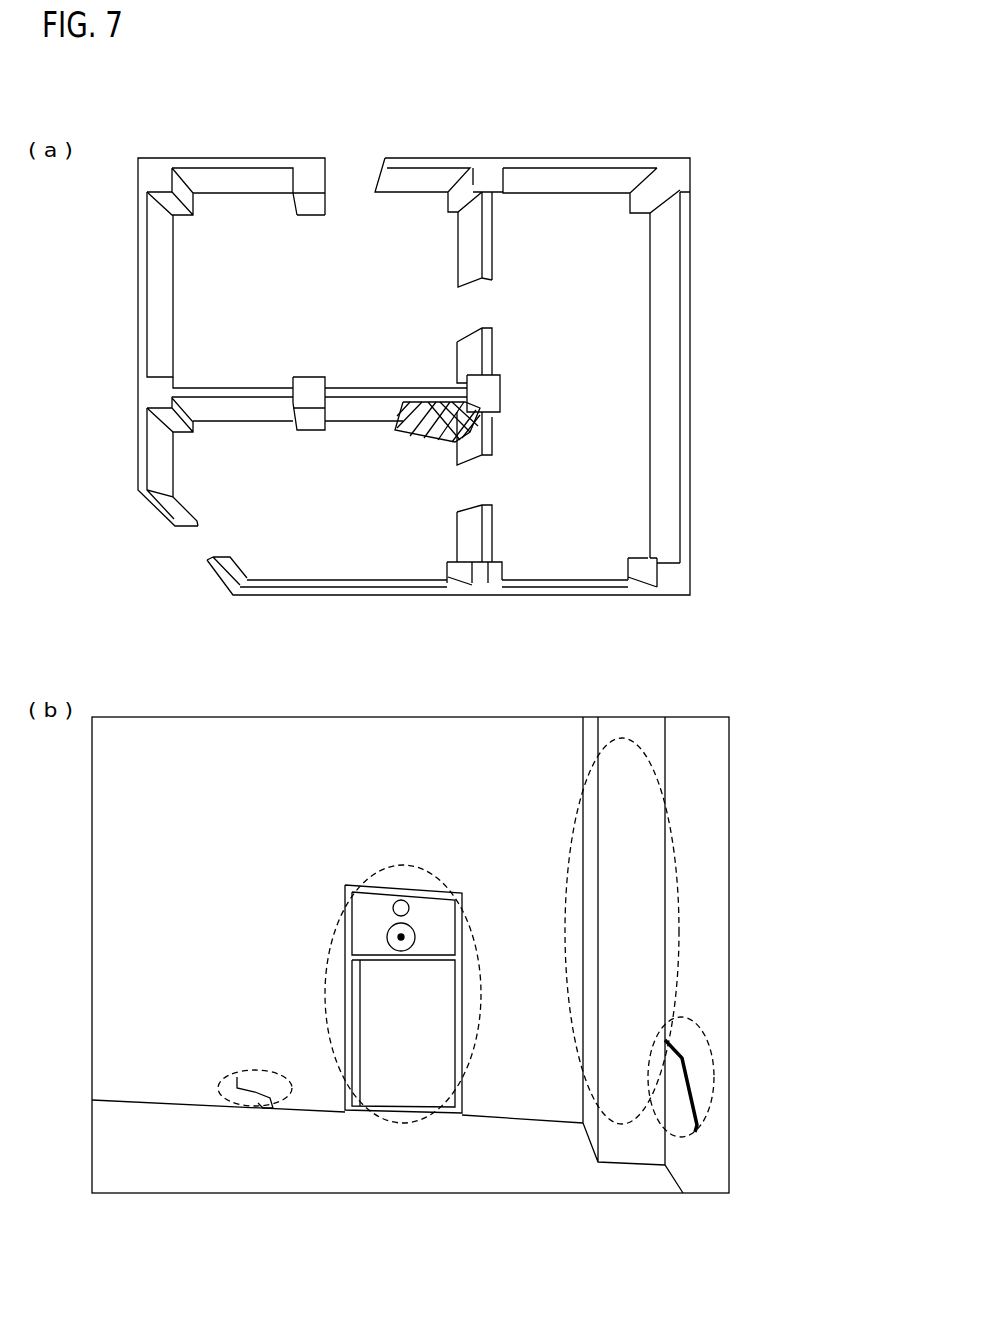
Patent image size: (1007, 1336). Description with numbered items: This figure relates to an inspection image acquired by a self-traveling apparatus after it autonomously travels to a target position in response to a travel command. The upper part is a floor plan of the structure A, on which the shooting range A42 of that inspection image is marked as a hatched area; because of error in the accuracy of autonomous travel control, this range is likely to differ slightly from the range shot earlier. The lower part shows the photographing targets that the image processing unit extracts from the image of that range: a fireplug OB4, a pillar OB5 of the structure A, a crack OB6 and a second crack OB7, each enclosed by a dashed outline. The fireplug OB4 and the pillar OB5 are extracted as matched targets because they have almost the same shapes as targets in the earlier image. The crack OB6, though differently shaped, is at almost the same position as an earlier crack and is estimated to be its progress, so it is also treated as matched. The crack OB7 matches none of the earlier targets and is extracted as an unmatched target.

The structure A is at (622, 139).
The shooting range A42 is at (489, 418).
The photographing target (fireplug) OB4 is at (343, 920).
The photographing target (pillar of structure) OB5 is at (685, 867).
The photographing target (crack) OB6 is at (713, 1020).
The photographing target (crack) OB7 is at (235, 1070).